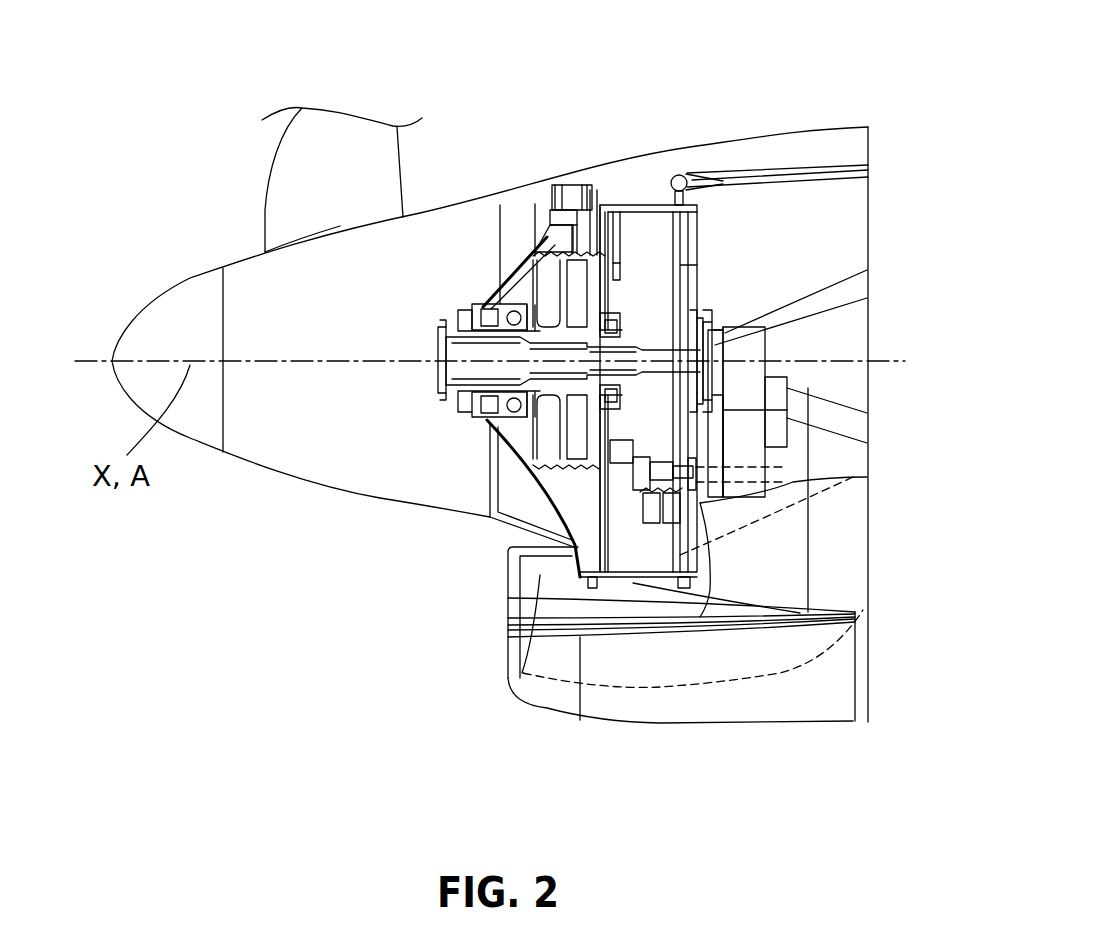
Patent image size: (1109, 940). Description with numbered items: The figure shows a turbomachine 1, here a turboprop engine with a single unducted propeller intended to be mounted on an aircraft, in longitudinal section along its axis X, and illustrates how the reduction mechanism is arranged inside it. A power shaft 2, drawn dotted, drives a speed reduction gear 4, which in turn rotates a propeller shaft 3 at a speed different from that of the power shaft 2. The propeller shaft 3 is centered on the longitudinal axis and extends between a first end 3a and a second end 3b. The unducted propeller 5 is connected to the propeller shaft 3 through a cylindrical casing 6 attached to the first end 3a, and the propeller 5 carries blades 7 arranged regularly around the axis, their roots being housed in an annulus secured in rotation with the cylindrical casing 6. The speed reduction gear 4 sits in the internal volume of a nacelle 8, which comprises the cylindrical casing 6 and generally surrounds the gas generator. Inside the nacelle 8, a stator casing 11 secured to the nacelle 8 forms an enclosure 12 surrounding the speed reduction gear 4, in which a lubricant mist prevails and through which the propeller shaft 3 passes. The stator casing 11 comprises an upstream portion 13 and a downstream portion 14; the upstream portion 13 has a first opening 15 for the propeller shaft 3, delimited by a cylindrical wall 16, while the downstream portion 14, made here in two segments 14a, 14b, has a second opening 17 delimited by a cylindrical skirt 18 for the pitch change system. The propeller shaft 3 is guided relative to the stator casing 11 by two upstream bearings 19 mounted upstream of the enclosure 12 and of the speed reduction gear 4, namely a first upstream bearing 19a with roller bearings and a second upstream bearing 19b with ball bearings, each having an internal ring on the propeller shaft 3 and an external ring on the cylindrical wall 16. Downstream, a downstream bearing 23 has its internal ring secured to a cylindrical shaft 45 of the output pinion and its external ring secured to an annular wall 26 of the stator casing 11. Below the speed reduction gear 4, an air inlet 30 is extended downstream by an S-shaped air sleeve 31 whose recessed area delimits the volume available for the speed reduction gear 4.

The turbomachine 1 is at (113, 130).
The power shaft 2 is at (790, 487).
The propeller shaft 3 is at (470, 388).
The first end 3a is at (443, 310).
The second end 3b is at (710, 328).
The speed reduction gear 4 is at (549, 291).
The propeller 5 is at (262, 173).
The cylindrical casing 6 is at (248, 487).
The blades 7 is at (277, 205).
The nacelle 8 is at (621, 208).
The stator casing 11 is at (625, 207).
The enclosure 12 is at (620, 557).
The upstream portion 13 is at (480, 415).
The downstream portion 14 is at (703, 323).
The first segment 14a is at (637, 275).
The second segment 14b is at (688, 577).
The first opening 15 is at (473, 400).
The cylindrical wall 16 is at (470, 310).
The second opening 17 is at (710, 325).
The cylindrical skirt 18 is at (706, 322).
The upstream bearings 19 is at (487, 307).
The first upstream bearing 19a is at (485, 420).
The second upstream bearing 19b is at (492, 425).
The downstream bearing 23 is at (625, 324).
The annular wall 26 is at (522, 673).
The air inlet 30 is at (505, 638).
The air sleeve 31 is at (763, 653).
The cylindrical shaft 45 is at (588, 250).